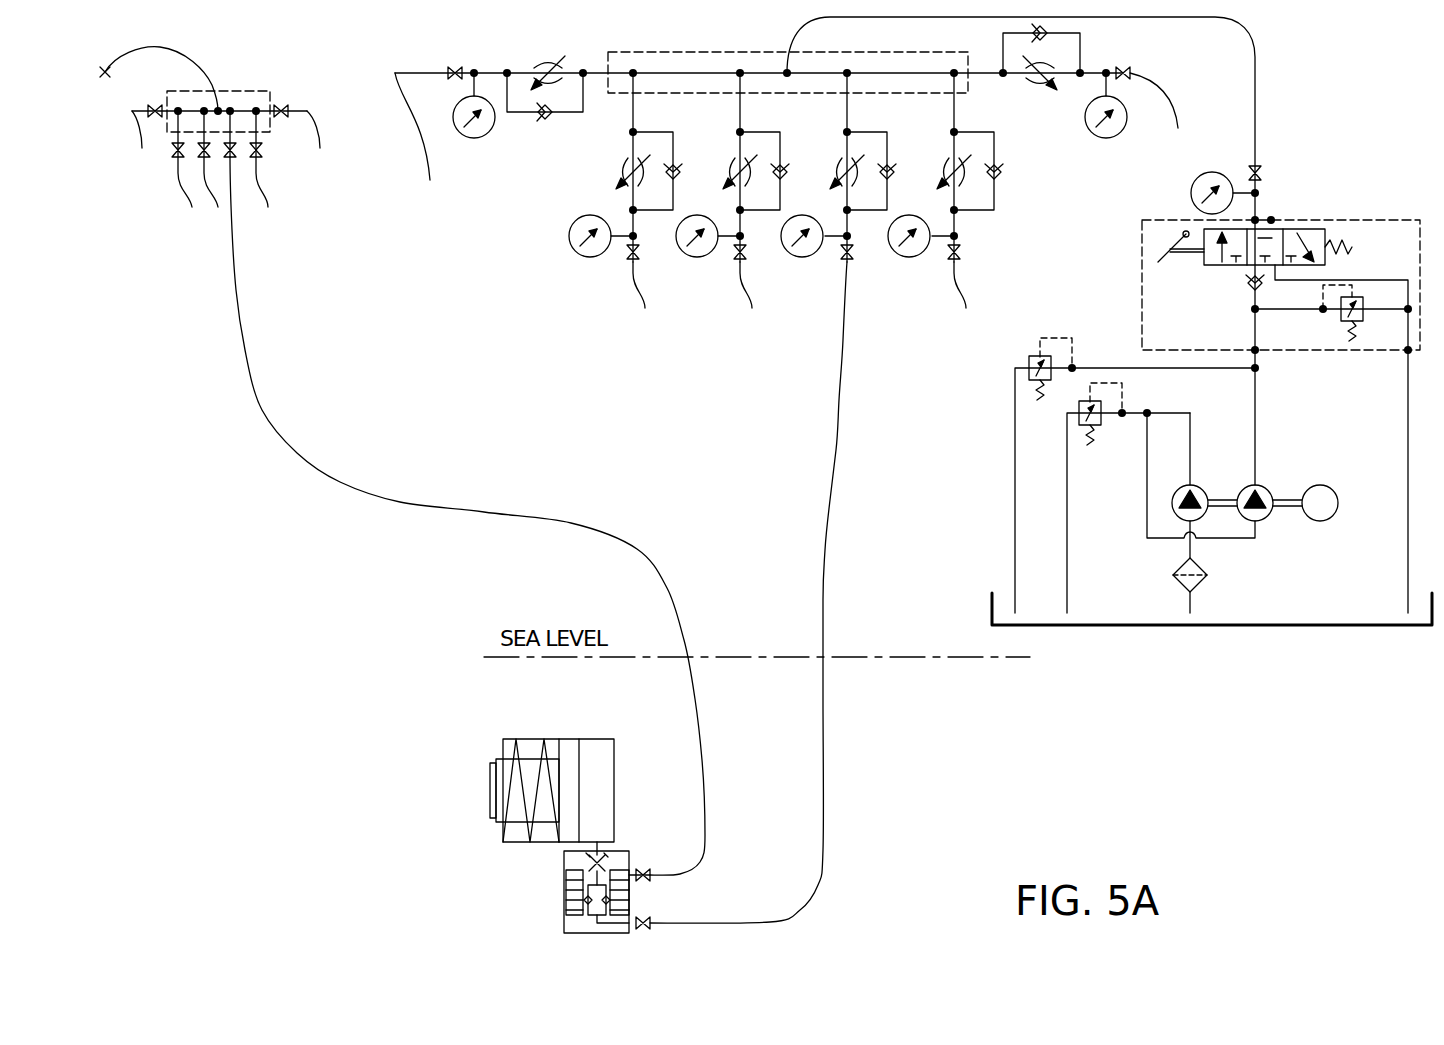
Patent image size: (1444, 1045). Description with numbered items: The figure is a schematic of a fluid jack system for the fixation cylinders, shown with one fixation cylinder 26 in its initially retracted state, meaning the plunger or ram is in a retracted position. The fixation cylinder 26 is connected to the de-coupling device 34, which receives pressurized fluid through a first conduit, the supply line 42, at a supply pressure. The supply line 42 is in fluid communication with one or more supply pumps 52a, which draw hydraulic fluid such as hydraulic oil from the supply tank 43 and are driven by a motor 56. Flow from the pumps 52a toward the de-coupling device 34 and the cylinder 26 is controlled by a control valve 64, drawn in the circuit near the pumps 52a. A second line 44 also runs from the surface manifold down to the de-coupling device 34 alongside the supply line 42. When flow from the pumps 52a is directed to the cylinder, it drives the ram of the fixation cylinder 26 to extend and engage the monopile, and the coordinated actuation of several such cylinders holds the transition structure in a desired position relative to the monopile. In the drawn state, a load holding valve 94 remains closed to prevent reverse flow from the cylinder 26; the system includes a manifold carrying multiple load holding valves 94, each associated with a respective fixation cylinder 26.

The fixation cylinder 26 is at (490, 794).
The de-coupling device 34 is at (564, 888).
The supply line 42 is at (823, 860).
The supply tank 43 is at (1212, 628).
The hydraulic line 44 is at (705, 838).
The supply pump 52a is at (1272, 487).
The motor 56 is at (1320, 521).
The directional control valve 64 is at (1335, 235).
The load holding valve 94 is at (871, 212).